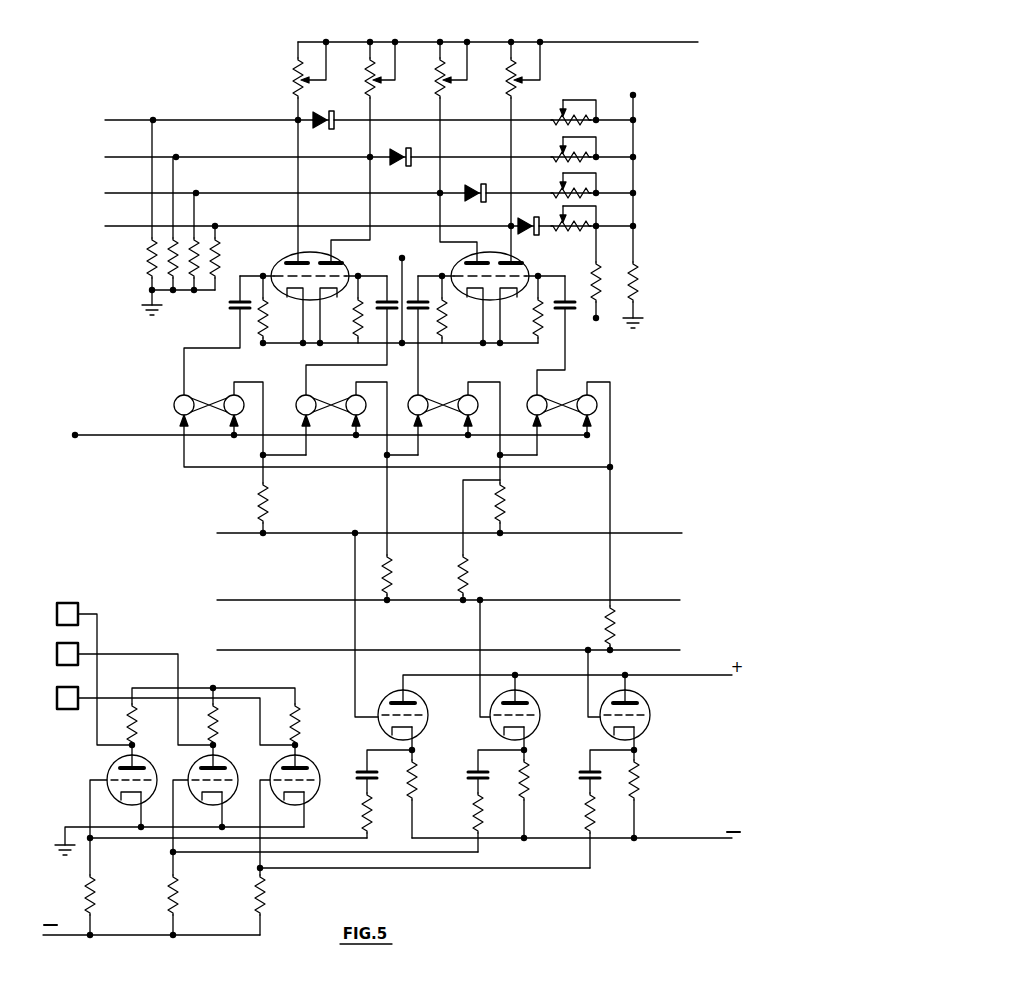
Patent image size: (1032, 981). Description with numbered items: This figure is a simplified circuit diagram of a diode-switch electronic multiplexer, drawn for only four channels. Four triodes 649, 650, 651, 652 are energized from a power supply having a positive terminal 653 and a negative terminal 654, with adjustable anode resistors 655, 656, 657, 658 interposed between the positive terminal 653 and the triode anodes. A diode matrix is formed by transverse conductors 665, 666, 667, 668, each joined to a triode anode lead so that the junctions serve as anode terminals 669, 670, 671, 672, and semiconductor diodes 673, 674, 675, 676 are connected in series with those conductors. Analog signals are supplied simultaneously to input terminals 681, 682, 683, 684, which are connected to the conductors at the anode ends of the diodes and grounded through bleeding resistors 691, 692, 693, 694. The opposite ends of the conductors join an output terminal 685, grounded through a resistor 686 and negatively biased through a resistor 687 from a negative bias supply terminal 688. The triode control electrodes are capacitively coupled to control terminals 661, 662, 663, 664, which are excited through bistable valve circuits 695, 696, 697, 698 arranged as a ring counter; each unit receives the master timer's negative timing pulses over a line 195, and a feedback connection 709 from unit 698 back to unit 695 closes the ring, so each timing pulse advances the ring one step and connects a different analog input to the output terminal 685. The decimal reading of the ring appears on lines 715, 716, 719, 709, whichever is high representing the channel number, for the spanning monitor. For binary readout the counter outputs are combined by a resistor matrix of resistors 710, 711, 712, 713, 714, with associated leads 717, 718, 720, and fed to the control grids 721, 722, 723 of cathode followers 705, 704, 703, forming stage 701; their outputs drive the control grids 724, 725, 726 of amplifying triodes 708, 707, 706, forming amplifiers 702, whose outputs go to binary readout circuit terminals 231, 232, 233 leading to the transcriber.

The positive terminal 653 is at (570, 42).
The adjustable anode resistor 655 is at (294, 70).
The adjustable anode resistor 656 is at (371, 57).
The adjustable anode resistor 657 is at (440, 57).
The adjustable anode resistor 658 is at (508, 90).
The input terminal 681 is at (193, 120).
The input terminal 682 is at (211, 157).
The input terminal 683 is at (221, 193).
The input terminal 684 is at (231, 226).
The transverse conductor 665 is at (425, 120).
The transverse conductor 666 is at (421, 156).
The transverse conductor 667 is at (425, 193).
The transverse conductor 668 is at (425, 226).
The anode terminal 669 is at (296, 119).
The anode terminal 670 is at (368, 160).
The anode terminal 671 is at (443, 192).
The anode terminal 672 is at (508, 226).
The semiconductor diode 673 is at (328, 130).
The semiconductor diode 674 is at (399, 149).
The semiconductor diode 675 is at (489, 190).
The semiconductor diode 676 is at (531, 220).
The output terminal 685 is at (636, 94).
The resistor 686 is at (638, 278).
The resistor 687 is at (592, 278).
The negative bias supply terminal 688 is at (592, 321).
The bleeding resistor 691 is at (147, 266).
The bleeding resistor 692 is at (176, 280).
The bleeding resistor 693 is at (197, 282).
The bleeding resistor 694 is at (221, 246).
The triode 649 is at (275, 270).
The triode 650 is at (350, 270).
The triode 651 is at (433, 299).
The triode 652 is at (522, 262).
The negative terminal 654 is at (398, 289).
The control terminal 661 is at (240, 346).
The control terminal 662 is at (387, 353).
The control terminal 663 is at (420, 346).
The control terminal 664 is at (568, 350).
The bistable valve circuit 695 is at (209, 405).
The bistable valve circuit 696 is at (331, 413).
The bistable valve circuit 697 is at (443, 414).
The bistable valve circuit 698 is at (562, 414).
The line 715 is at (255, 381).
The line 716 is at (372, 382).
The line 719 is at (500, 385).
The feedback connection 709 is at (612, 396).
The line 195 is at (112, 431).
The resistor 710 is at (268, 505).
The resistor 711 is at (393, 575).
The resistor 712 is at (505, 498).
The resistor 713 is at (469, 575).
The resistor 714 is at (614, 632).
The lead 717 is at (445, 532).
The lead 718 is at (425, 602).
The lead 720 is at (560, 650).
The cathode follower 705 is at (423, 703).
The cathode follower 704 is at (534, 703).
The cathode follower 703 is at (650, 710).
The control grid 721 is at (419, 721).
The control grid 722 is at (531, 721).
The control grid 723 is at (641, 721).
The cathode followers 701 is at (536, 795).
The amplifiers 702 is at (345, 827).
The binary readout circuit terminal 231 is at (99, 620).
The binary readout circuit terminal 232 is at (136, 654).
The binary readout circuit terminal 233 is at (114, 696).
The amplifying triode 708 is at (149, 773).
The amplifying triode 707 is at (232, 773).
The amplifying triode 706 is at (311, 765).
The control grid 724 is at (110, 776).
The control grid 725 is at (213, 791).
The control grid 726 is at (295, 791).